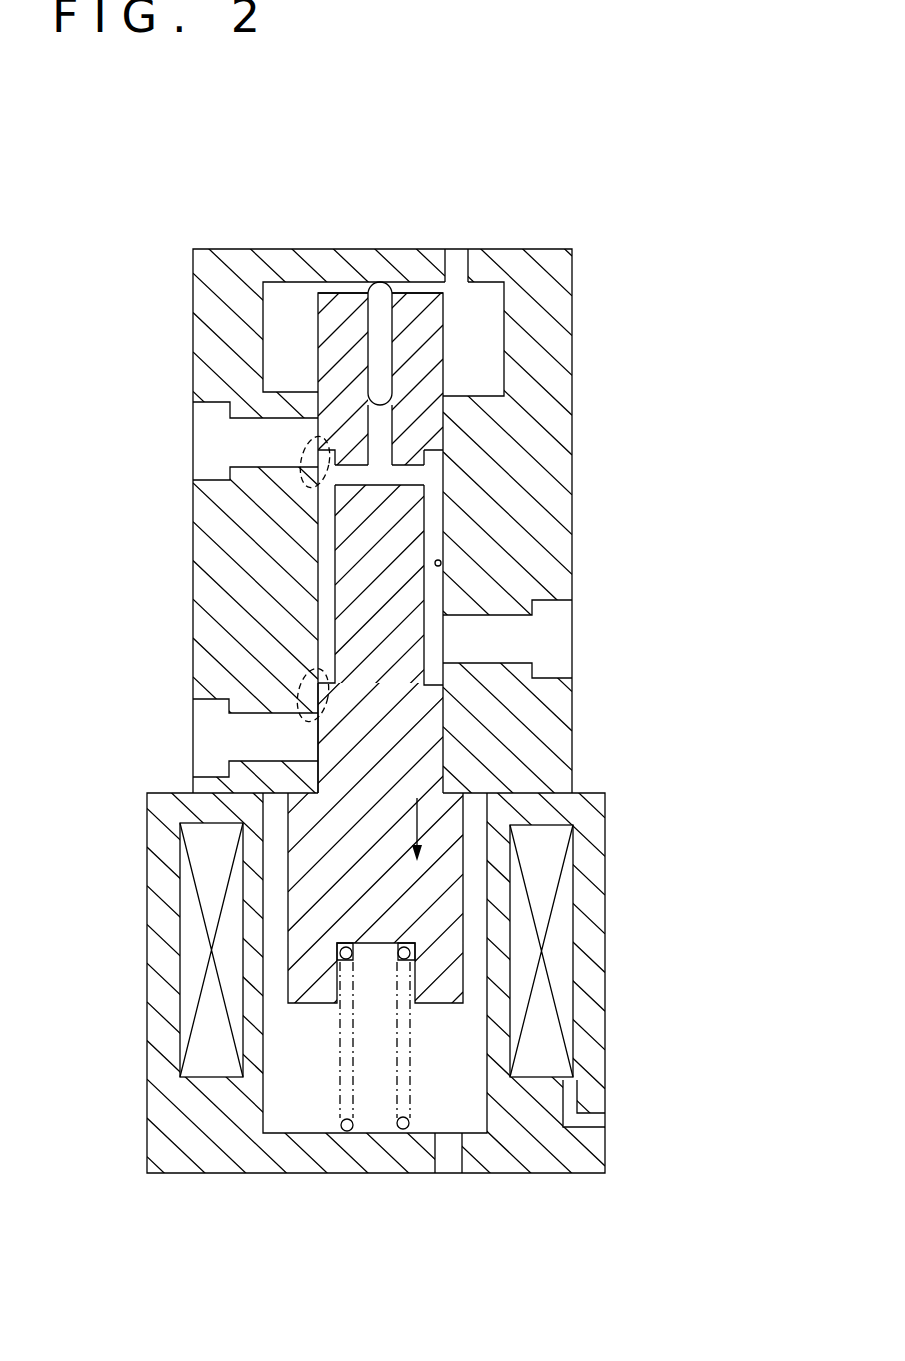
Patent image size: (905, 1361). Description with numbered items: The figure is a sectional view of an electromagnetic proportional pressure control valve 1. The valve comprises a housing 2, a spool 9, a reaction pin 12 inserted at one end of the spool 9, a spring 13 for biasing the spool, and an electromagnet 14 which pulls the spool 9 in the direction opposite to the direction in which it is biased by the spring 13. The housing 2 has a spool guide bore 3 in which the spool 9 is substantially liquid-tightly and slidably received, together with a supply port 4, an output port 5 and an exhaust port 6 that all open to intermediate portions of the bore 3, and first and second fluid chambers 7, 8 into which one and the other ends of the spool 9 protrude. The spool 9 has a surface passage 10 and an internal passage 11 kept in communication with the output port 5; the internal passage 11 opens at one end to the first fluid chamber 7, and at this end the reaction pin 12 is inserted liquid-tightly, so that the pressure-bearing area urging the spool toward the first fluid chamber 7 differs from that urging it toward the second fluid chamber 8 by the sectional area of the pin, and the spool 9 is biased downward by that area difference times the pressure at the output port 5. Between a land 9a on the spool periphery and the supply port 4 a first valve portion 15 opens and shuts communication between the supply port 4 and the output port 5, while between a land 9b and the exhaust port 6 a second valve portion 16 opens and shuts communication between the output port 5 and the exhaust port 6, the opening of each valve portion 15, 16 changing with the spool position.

The electromagnetic proportional pressure control valve 1 is at (612, 290).
The housing 2 is at (523, 270).
The spool guide bore 3 is at (443, 563).
The supply port 4 is at (199, 446).
The output port 5 is at (553, 638).
The exhaust port 6 is at (202, 734).
The first fluid chamber 7 is at (283, 307).
The second fluid chamber 8 is at (303, 1105).
The spool 9 is at (412, 539).
The land 9a is at (317, 358).
The land 9b is at (322, 743).
The surface passage 10 is at (443, 657).
The internal passage 11 is at (377, 468).
The reaction pin 12 is at (380, 300).
The spring 13 is at (405, 1133).
The electromagnet 14 is at (596, 977).
The first valve portion 15 is at (304, 474).
The second valve portion 16 is at (297, 682).